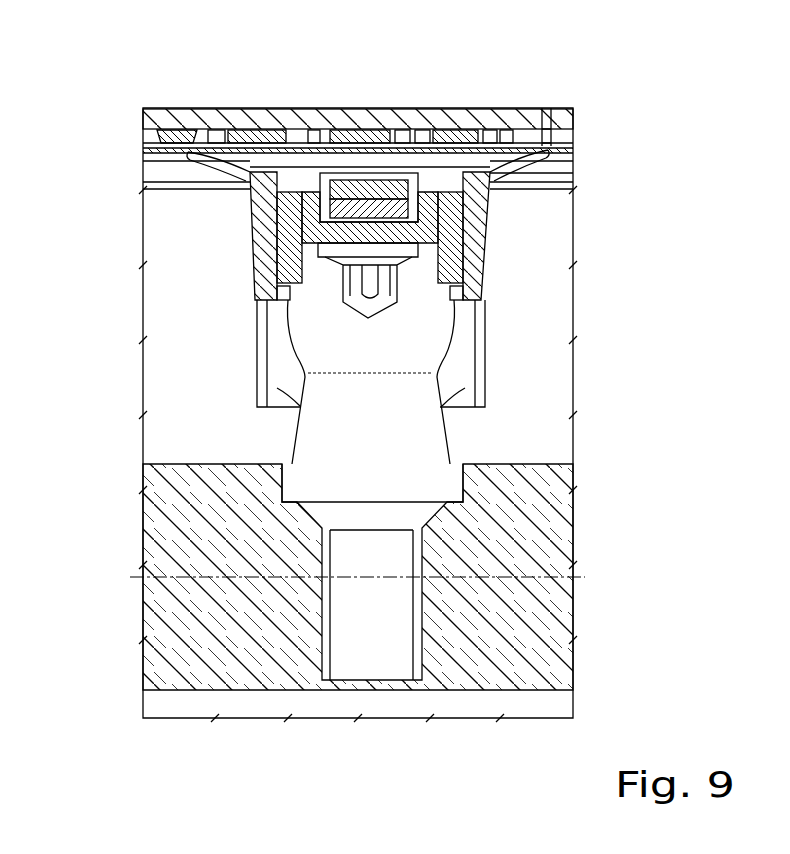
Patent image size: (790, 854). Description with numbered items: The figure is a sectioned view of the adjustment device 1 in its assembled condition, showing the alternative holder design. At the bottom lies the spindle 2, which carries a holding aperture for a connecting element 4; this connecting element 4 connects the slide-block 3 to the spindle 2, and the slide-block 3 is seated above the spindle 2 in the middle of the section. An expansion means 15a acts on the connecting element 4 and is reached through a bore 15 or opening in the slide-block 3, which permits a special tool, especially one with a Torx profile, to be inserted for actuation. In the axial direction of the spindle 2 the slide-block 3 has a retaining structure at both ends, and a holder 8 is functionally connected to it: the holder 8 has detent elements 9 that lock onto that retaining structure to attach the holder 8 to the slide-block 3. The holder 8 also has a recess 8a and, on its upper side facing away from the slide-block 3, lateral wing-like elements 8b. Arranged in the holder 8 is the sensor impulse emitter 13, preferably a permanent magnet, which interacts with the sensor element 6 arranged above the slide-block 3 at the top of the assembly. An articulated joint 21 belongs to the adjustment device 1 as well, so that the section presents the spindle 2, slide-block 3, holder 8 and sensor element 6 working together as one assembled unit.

The adjustment device 1 is at (126, 96).
The spindle 2 is at (513, 515).
The slide-block 3 is at (265, 262).
The connecting element 4 is at (417, 437).
The sensor element 6 is at (548, 100).
The holder 8 is at (484, 236).
The recess 8a is at (383, 176).
The wing-like elements 8b is at (494, 176).
The detent elements 9 is at (477, 308).
The sensor impulse emitter 13 is at (343, 205).
The bore 15 is at (327, 240).
The expansion means 15a is at (357, 290).
The articulated joint 21 is at (197, 229).